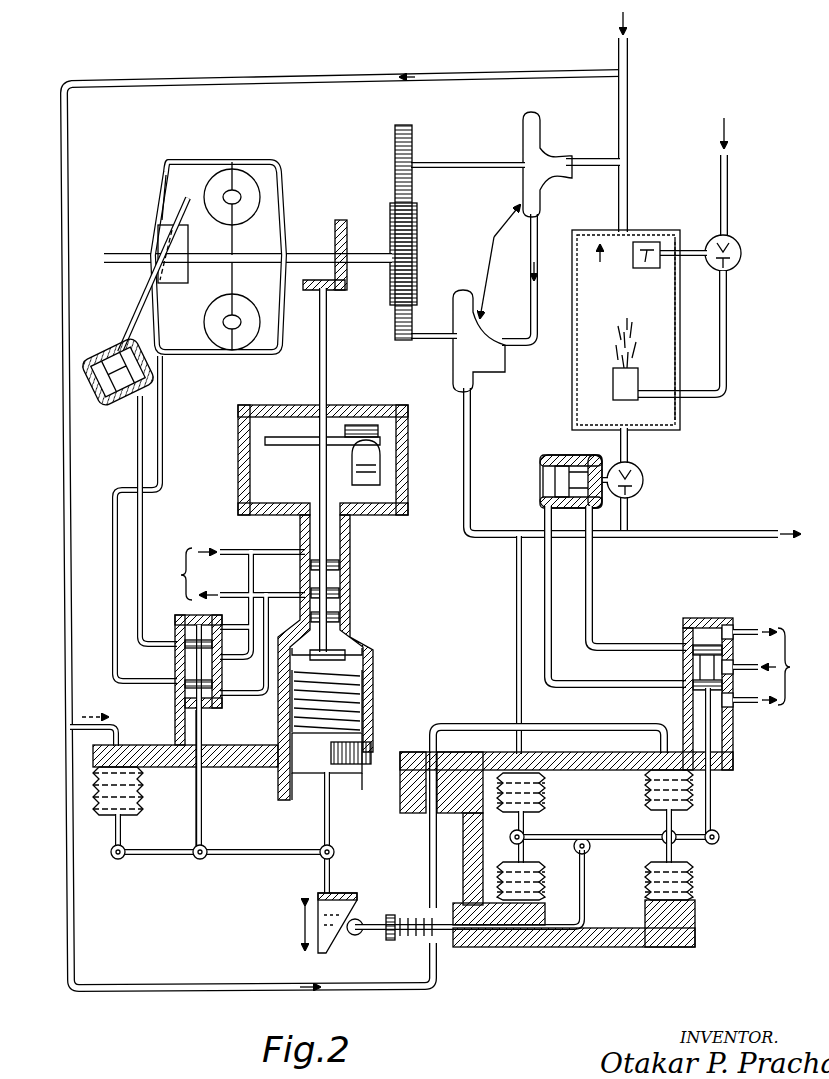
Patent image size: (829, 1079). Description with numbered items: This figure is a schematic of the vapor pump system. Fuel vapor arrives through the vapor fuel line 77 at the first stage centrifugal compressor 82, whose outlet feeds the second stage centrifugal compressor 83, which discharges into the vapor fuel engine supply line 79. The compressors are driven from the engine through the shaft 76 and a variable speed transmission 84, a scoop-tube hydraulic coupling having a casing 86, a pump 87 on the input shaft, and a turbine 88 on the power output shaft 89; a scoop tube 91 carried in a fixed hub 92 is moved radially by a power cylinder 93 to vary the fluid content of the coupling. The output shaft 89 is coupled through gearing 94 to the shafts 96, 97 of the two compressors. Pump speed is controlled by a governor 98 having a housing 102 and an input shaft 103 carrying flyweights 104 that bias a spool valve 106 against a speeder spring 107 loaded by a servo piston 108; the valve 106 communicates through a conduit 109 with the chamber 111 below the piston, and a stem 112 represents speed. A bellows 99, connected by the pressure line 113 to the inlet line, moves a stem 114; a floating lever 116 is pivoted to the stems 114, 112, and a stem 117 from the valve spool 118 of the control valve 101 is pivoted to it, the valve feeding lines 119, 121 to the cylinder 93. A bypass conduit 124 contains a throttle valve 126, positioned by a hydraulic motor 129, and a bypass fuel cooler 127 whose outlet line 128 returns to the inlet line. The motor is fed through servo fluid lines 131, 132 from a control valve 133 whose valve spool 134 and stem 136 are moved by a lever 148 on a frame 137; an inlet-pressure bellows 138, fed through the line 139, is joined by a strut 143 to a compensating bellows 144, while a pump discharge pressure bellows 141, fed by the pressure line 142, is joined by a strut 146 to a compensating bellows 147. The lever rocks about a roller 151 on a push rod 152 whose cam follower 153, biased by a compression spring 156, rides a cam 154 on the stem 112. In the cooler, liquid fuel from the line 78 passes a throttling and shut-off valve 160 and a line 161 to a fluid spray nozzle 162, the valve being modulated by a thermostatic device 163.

The shaft 76 is at (118, 262).
The vapor fuel line 77 is at (628, 52).
The line 78 is at (729, 172).
The vapor fuel engine supply line 79 is at (718, 540).
The first stage centrifugal compressor 82 is at (545, 152).
The second stage centrifugal compressor 83 is at (472, 352).
The variable speed transmission 84 is at (200, 162).
The casing 86 is at (164, 180).
The pump 87 is at (212, 322).
The turbine 88 is at (245, 196).
The power output shaft 89 is at (333, 248).
The scoop tube 91 is at (172, 205).
The fixed hub 92 is at (158, 238).
The power cylinder 93 is at (108, 356).
The gearing 94 is at (412, 222).
The shaft 96 is at (452, 160).
The shaft 97 is at (432, 342).
The governor 98 is at (238, 462).
The bellows 99 is at (112, 808).
The control valve 101 is at (177, 696).
The housing 102 is at (396, 510).
The input shaft 103 is at (327, 378).
The flyweights 104 is at (380, 470).
The spool valve 106 is at (340, 556).
The speeder spring 107 is at (290, 700).
The servo piston 108 is at (294, 790).
The conduit 109 is at (388, 660).
The chamber 111 is at (296, 805).
The stem 112 is at (331, 820).
The pressure line 113 is at (66, 432).
The stem 114 is at (122, 827).
The floating lever 116 is at (218, 856).
The stem 117 is at (202, 778).
The valve spool 118 is at (188, 662).
The line 119 is at (143, 512).
The line 121 is at (113, 490).
The conduit 124 is at (630, 516).
The throttle valve 126 is at (644, 470).
The bypass fuel cooler 127 is at (681, 290).
The line 128 is at (618, 213).
The hydraulic motor 129 is at (560, 455).
The servo fluid line 131 is at (605, 643).
The servo fluid line 132 is at (582, 688).
The control valve 133 is at (720, 620).
The valve spool 134 is at (698, 662).
The stem 136 is at (712, 790).
The frame 137 is at (655, 948).
The bellows 138 is at (652, 780).
The line 139 is at (670, 712).
The pump discharge pressure bellows 141 is at (528, 782).
The pressure line 142 is at (515, 592).
The strut 143 is at (665, 818).
The compensating bellows 144 is at (693, 880).
The strut 146 is at (523, 824).
The compensating bellows 147 is at (548, 858).
The lever 148 is at (594, 836).
The roller 151 is at (591, 848).
The push rod 152 is at (552, 935).
The cam follower 153 is at (355, 936).
The cam 154 is at (350, 900).
The compression spring 156 is at (425, 938).
The throttling and shut-off valve 160 is at (742, 256).
The line 161 is at (728, 337).
The fluid spray nozzle 162 is at (616, 378).
The thermostatic device 163 is at (645, 270).